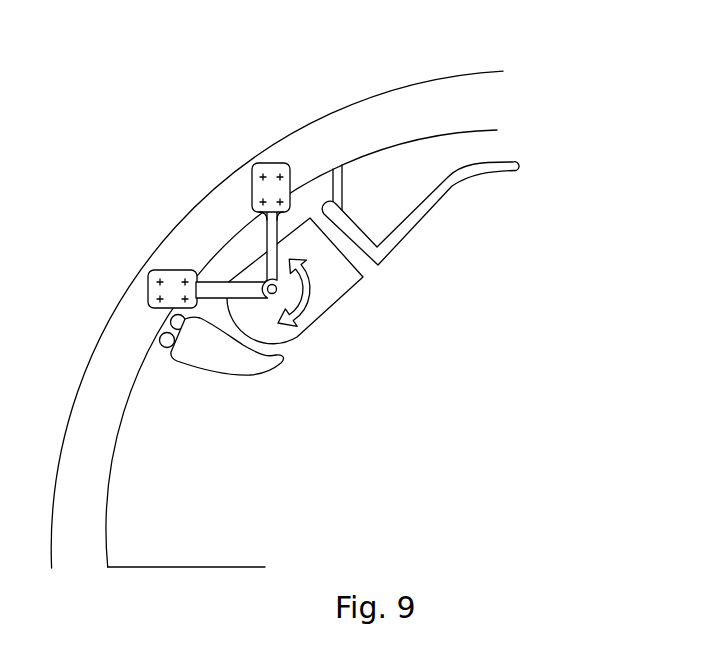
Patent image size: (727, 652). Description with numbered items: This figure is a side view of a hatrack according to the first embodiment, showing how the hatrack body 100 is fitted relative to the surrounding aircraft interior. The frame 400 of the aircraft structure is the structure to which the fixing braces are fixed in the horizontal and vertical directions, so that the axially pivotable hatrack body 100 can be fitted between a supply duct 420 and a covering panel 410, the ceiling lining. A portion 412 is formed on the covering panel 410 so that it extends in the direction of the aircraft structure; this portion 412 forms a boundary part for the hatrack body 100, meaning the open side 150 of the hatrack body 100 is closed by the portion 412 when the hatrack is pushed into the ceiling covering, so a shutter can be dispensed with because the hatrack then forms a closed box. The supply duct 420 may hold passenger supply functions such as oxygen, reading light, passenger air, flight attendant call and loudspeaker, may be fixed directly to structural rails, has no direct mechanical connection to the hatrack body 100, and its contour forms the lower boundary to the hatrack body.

The frame 400 is at (448, 93).
The covering panel 410 is at (481, 168).
The portion 412 is at (348, 232).
The hatrack body 100 is at (311, 264).
The open side 150 is at (357, 262).
The supply duct 420 is at (205, 355).